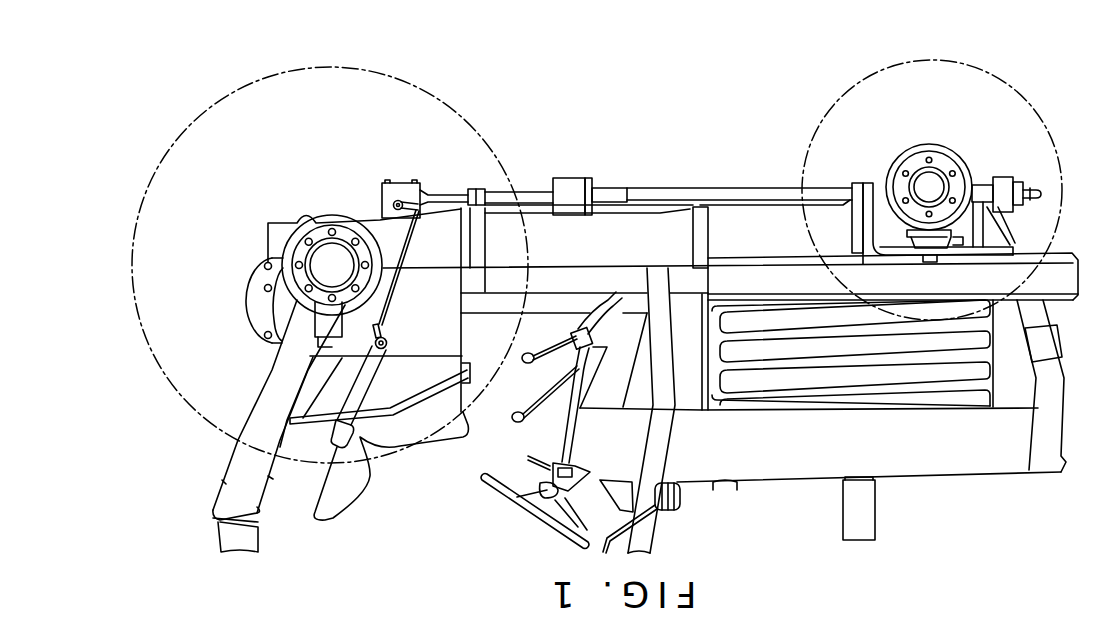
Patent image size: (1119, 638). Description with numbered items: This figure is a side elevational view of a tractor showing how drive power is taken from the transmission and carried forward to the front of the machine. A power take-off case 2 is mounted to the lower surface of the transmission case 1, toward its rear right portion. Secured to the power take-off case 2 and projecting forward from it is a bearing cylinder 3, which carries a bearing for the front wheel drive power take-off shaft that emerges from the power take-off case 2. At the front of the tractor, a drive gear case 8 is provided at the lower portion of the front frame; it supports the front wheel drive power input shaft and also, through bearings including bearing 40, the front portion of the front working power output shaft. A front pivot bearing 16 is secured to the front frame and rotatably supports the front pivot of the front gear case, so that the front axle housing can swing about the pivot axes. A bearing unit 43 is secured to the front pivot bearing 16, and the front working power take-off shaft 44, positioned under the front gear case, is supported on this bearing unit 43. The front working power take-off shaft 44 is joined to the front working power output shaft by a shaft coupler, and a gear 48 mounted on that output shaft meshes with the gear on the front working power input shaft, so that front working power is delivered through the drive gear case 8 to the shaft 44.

The transmission case 1 is at (440, 208).
The power take-off case 2 is at (397, 183).
The bearing cylinder 3 is at (477, 189).
The drive gear case 8 is at (866, 174).
The front pivot bearing 16 is at (1000, 226).
The bearing 40 is at (876, 187).
The bearing unit 43 is at (852, 184).
The front working power take-off shaft 44 is at (1030, 188).
The gear 48 is at (997, 177).